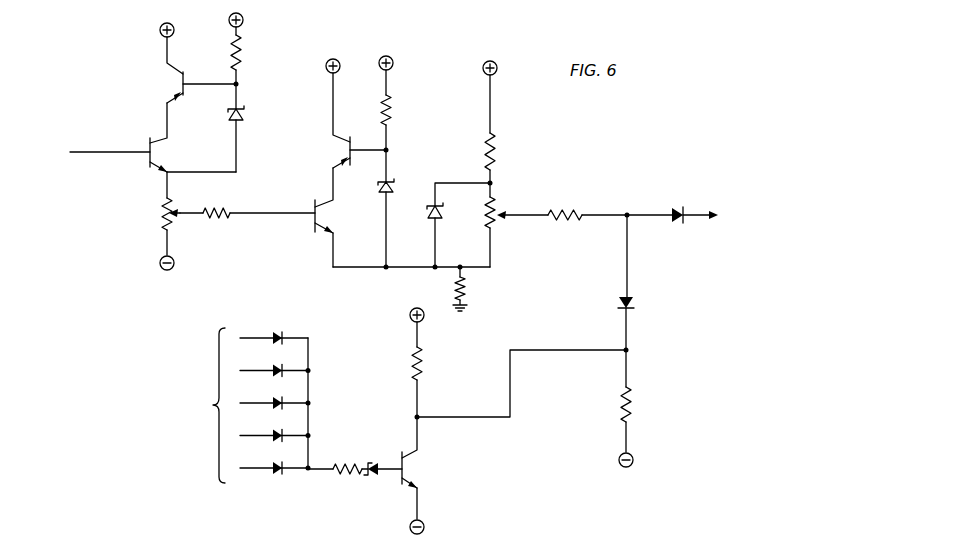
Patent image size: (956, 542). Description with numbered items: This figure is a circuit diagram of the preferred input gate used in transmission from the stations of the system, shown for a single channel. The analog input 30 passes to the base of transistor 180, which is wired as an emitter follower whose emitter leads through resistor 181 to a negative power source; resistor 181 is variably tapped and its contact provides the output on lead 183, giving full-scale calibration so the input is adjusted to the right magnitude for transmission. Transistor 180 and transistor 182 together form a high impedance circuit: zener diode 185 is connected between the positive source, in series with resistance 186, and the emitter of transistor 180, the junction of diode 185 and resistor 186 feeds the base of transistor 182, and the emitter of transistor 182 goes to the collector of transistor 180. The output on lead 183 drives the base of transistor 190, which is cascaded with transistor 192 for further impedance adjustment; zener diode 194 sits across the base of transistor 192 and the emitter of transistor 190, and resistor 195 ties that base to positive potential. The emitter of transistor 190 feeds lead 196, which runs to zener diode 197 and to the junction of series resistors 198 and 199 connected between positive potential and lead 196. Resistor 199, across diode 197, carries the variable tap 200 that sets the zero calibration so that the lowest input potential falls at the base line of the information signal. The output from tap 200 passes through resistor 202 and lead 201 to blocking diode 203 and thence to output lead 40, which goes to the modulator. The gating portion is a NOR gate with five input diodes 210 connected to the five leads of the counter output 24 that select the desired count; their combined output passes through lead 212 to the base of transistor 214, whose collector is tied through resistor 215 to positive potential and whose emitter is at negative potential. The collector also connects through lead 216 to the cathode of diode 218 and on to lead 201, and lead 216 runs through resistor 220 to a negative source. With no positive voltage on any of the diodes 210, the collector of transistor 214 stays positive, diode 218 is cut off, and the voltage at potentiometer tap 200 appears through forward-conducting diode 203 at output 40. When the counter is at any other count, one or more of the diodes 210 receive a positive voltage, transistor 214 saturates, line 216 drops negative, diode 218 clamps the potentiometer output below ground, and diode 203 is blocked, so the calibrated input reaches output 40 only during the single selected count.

The input 30 is at (108, 152).
The transistor 180 is at (150, 143).
The resistor 181 is at (159, 226).
The transistor 182 is at (180, 83).
The lead 183 is at (278, 199).
The zener diode 185 is at (243, 114).
The resistance 186 is at (240, 44).
The transistor 190 is at (312, 226).
The transistor 192 is at (347, 151).
The zener diode 194 is at (390, 181).
The resistor 195 is at (390, 111).
The lead 196 is at (396, 270).
The zener diode 197 is at (426, 210).
The resistor 198 is at (495, 141).
The resistor 199 is at (495, 213).
The variable tap 200 is at (540, 215).
The lead 201 is at (660, 208).
The resistor 202 is at (580, 218).
The blocking diode 203 is at (683, 224).
The output lead 40 is at (719, 192).
The input diodes 210 is at (302, 338).
The lead 212 is at (330, 470).
The transistor 214 is at (402, 462).
The resistor 215 is at (412, 368).
The lead 216 is at (511, 383).
The blocking diode 218 is at (620, 305).
The resistor 220 is at (630, 401).
The output 24 is at (160, 405).